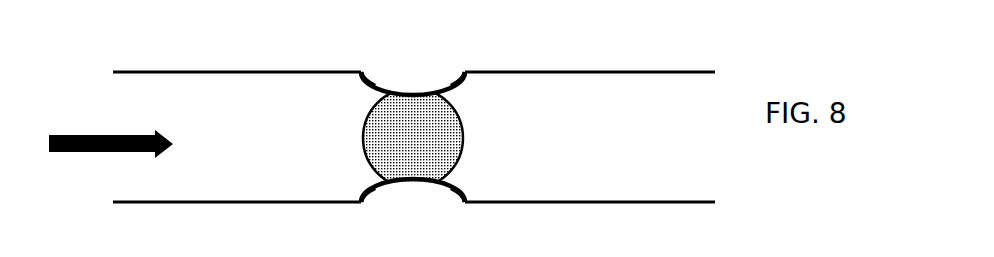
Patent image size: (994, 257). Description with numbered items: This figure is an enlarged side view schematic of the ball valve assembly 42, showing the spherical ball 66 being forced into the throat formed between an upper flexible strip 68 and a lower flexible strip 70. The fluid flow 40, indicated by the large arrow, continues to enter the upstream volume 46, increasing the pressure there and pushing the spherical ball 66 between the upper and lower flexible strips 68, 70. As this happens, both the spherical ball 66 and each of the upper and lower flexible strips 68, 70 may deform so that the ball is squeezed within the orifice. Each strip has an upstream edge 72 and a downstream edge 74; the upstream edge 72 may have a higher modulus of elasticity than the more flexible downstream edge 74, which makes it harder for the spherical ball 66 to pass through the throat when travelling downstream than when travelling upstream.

The fluid flow 40 is at (72, 152).
The ball valve assembly 42 is at (253, 49).
The upstream volume 46 is at (178, 187).
The spherical ball 66 is at (368, 137).
The upper flexible strip 68 is at (413, 93).
The lower flexible strip 70 is at (413, 181).
The upstream edge 72 is at (368, 88).
The downstream edge 74 is at (458, 88).